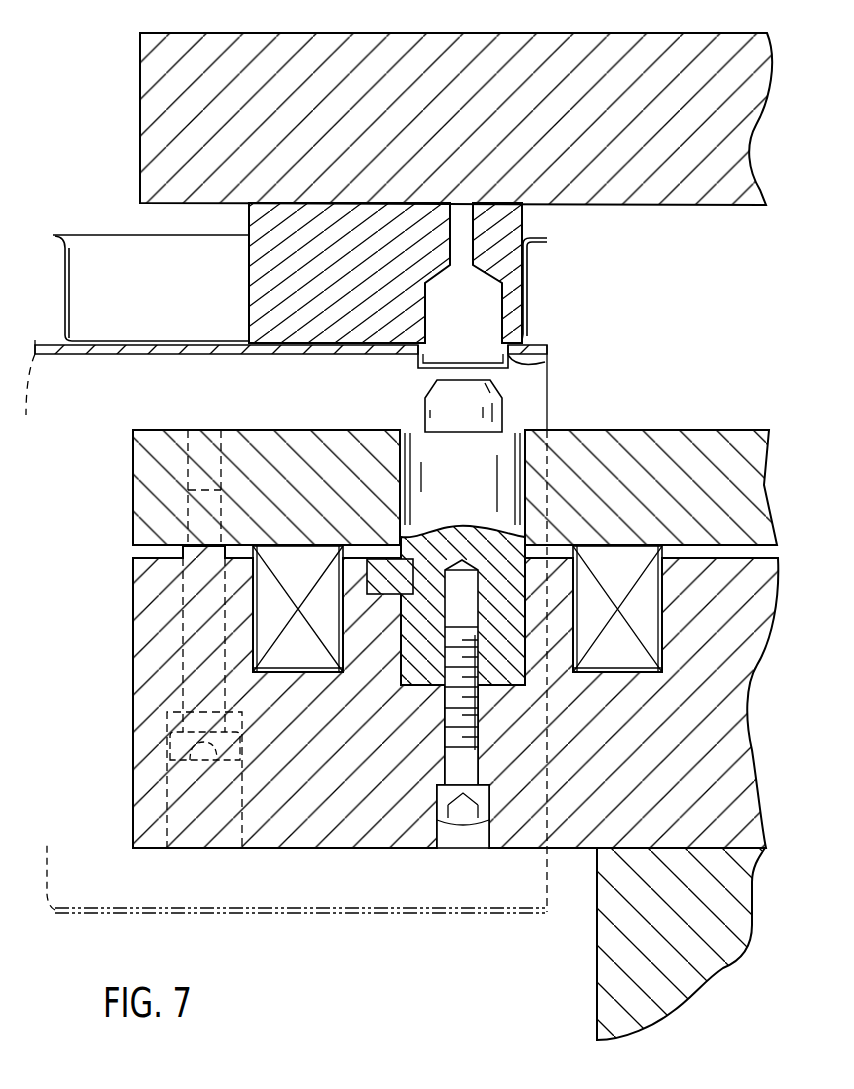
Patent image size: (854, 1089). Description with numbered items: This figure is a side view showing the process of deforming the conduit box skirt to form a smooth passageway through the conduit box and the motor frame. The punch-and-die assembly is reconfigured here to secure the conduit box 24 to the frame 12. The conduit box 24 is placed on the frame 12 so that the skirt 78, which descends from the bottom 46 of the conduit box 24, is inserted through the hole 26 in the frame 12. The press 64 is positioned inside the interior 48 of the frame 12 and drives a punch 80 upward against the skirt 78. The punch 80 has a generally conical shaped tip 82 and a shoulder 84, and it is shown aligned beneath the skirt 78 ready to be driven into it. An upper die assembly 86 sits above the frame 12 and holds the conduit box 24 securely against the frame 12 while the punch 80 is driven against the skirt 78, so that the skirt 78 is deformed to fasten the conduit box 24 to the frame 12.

The frame 12 is at (538, 344).
The conduit box 24 is at (529, 275).
The hole 26 is at (548, 365).
The bottom 46 is at (168, 344).
The interior 48 is at (100, 511).
The press 64 is at (755, 664).
The skirt 78 is at (418, 362).
The punch 80 is at (477, 510).
The tip 82 is at (432, 384).
The shoulder 84 is at (413, 437).
The upper die assembly 86 is at (273, 281).